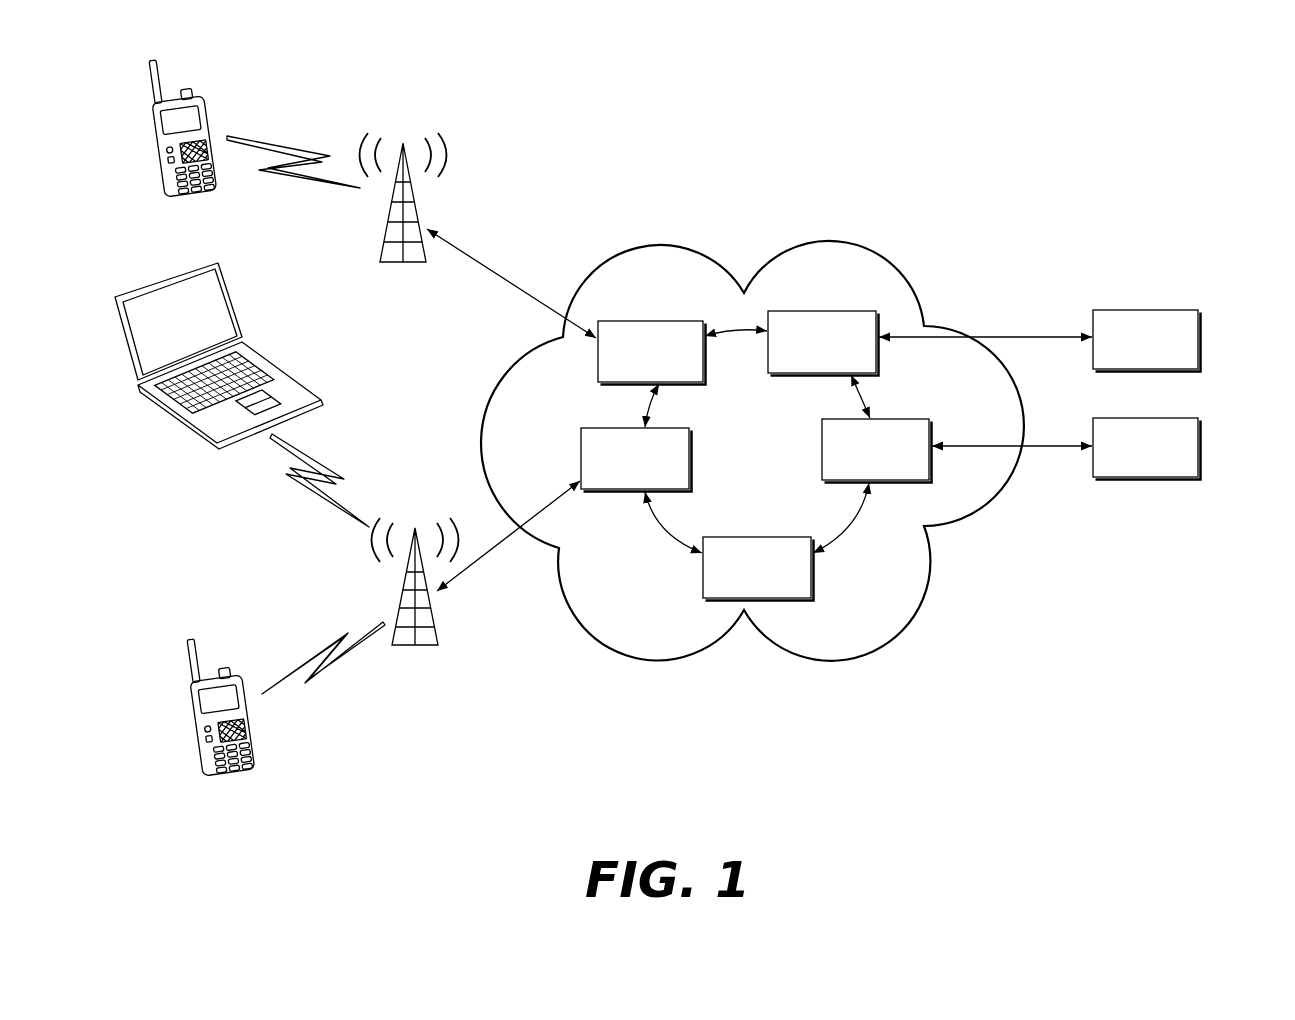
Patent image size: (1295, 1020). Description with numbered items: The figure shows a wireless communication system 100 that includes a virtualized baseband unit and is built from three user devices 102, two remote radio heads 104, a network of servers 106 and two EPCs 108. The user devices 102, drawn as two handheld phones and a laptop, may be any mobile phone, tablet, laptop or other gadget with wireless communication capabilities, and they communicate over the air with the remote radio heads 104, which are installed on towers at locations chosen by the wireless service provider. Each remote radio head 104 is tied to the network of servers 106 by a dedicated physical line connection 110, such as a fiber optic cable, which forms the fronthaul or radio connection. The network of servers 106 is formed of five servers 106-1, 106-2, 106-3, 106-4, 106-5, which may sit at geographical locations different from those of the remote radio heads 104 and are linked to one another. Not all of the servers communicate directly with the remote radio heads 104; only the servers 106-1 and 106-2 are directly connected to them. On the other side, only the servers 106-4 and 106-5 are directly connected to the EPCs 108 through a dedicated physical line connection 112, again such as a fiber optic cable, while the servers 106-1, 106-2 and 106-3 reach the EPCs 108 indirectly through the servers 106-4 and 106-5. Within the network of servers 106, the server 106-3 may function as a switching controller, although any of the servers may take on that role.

The wireless communication system 100 is at (976, 98).
The user device 102 is at (153, 148).
The remote radio head (RRH) 104 is at (403, 265).
The network of servers 106 is at (830, 242).
The server 106-1 is at (653, 321).
The server 106-2 is at (581, 449).
The server 106-3 is at (748, 537).
The server 106-4 is at (808, 311).
The server 106-5 is at (918, 419).
The EPC 108 is at (1200, 340).
The dedicated physical line connection 110 is at (486, 264).
The dedicated physical line/connection 112 is at (1003, 336).